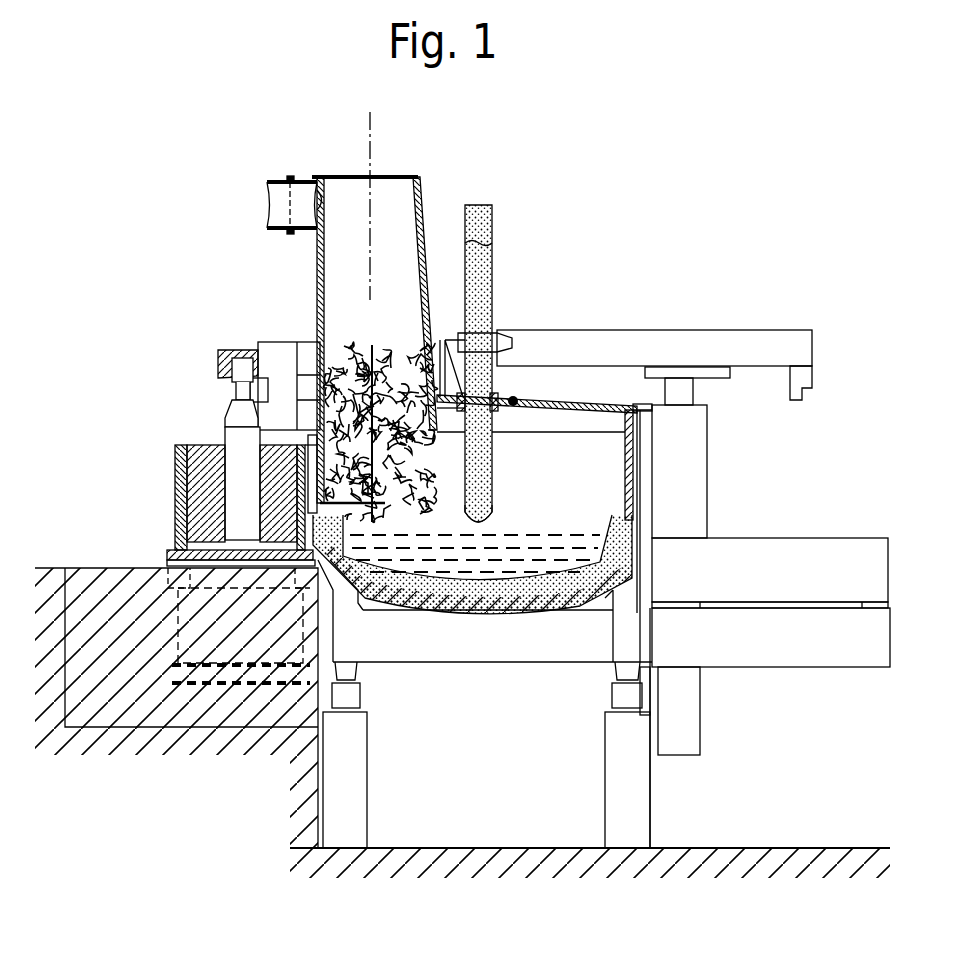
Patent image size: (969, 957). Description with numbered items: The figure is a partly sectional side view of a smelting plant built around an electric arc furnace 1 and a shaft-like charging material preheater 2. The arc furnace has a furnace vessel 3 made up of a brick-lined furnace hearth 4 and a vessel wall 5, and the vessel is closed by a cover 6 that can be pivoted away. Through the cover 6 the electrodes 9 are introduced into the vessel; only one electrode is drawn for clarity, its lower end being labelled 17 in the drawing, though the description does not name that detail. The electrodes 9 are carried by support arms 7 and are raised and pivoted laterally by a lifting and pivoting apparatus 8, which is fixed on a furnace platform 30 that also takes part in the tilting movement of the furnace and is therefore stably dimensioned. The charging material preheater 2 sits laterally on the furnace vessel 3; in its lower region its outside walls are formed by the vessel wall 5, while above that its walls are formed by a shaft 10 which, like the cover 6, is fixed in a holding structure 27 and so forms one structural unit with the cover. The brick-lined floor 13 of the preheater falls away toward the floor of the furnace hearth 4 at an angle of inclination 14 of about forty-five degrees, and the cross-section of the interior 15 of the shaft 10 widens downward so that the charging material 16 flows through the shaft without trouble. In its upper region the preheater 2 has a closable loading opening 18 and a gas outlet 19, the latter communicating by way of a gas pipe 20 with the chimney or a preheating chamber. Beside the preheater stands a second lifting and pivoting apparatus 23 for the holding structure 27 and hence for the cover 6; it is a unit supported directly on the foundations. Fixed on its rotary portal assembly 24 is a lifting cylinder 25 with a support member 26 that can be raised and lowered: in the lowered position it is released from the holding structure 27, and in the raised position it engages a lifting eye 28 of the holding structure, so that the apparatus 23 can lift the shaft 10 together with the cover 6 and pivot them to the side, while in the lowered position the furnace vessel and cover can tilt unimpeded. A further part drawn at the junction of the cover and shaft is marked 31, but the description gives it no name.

The electric arc furnace 1 is at (580, 318).
The charging material preheater 2 is at (442, 189).
The furnace vessel 3 is at (652, 490).
The furnace hearth 4 is at (548, 600).
The vessel wall 5 is at (632, 458).
The cover 6 is at (560, 448).
The support arms 7 is at (685, 342).
The lifting and pivoting apparatus 8 is at (788, 536).
The electrodes 9 is at (493, 247).
The shaft 10 is at (427, 243).
The brick-lined floor 13 is at (362, 517).
The angle of inclination 14 is at (395, 525).
The interior 15 is at (335, 266).
The charging material 16 is at (386, 350).
The electrode tip 17 is at (470, 484).
The loading opening 18 is at (380, 180).
The gas outlet 19 is at (324, 185).
The gas pipe 20 is at (268, 200).
The lifting and pivoting apparatus 23 is at (175, 440).
The rotary portal assembly 24 is at (175, 564).
The lifting cylinder 25 is at (200, 518).
The support member 26 is at (232, 472).
The holding structure 27 is at (287, 344).
The lifting eye 28 is at (230, 352).
The furnace platform 30 is at (792, 645).
The cover plate 31 is at (554, 418).